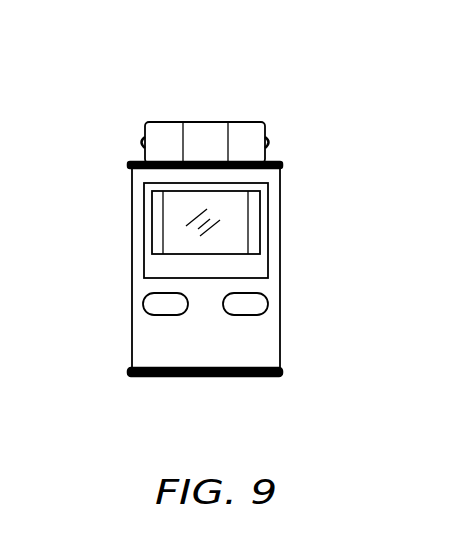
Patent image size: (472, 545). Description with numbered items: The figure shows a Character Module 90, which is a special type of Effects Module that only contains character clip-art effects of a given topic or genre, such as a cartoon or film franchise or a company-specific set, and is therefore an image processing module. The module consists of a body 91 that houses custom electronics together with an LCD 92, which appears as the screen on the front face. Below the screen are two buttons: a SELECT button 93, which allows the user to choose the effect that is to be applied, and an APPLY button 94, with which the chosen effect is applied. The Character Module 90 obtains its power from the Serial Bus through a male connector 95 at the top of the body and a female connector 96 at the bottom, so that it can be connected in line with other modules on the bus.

The Character Module 90 is at (312, 98).
The body 91 is at (280, 352).
The LCD 92 is at (175, 240).
The SELECT button 93 is at (160, 303).
The APPLY button 94 is at (248, 303).
The male connector 95 is at (170, 122).
The female connector 96 is at (167, 377).